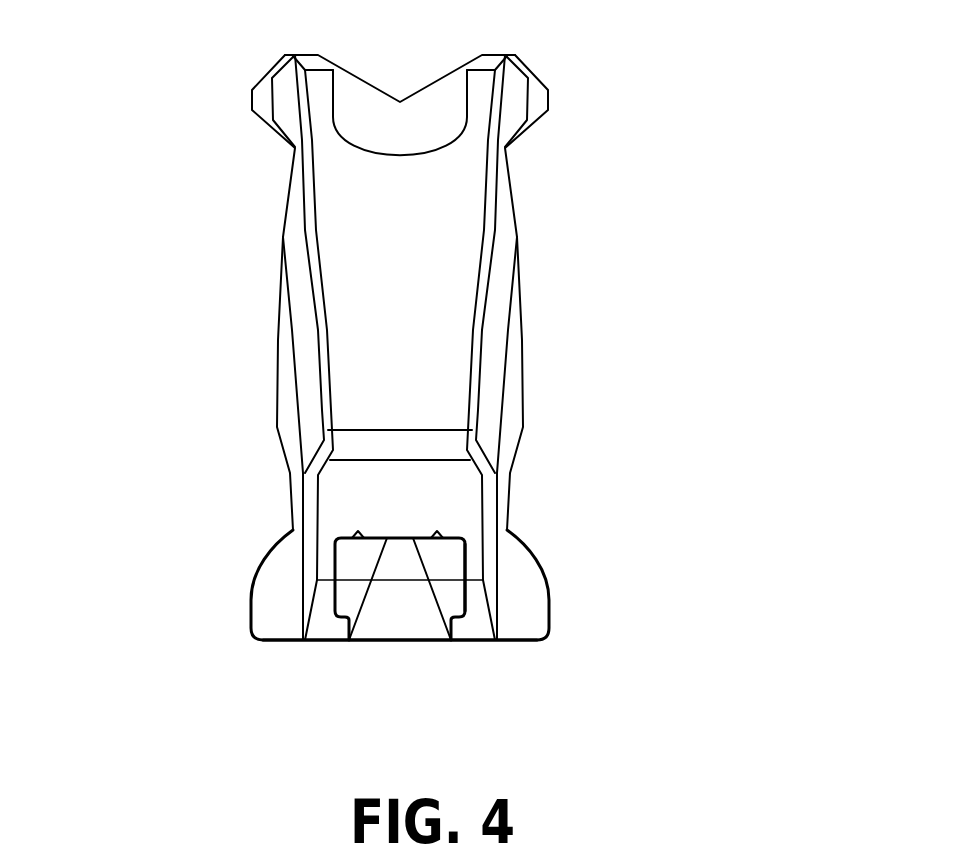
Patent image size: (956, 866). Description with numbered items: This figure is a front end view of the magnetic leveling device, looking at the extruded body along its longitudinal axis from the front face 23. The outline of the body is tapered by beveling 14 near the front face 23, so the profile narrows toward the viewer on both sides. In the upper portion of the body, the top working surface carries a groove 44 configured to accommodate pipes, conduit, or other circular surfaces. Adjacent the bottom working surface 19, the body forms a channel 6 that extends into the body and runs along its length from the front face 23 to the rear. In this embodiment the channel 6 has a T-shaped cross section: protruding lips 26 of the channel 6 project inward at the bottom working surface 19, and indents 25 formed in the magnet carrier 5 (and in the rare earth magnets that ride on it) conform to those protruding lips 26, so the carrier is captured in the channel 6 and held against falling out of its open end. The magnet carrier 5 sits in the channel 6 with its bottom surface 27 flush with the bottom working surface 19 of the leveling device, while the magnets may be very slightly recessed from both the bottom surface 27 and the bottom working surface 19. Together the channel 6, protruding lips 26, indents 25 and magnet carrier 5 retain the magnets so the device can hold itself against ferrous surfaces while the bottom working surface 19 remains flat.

The groove 44 is at (402, 98).
The front face 23 is at (387, 278).
The beveling 14 is at (298, 282).
The indents 25 is at (392, 537).
The magnet carrier 5 is at (335, 562).
The channel 6 is at (467, 552).
The protruding lips 26 is at (343, 640).
The bottom working surface 19 is at (507, 642).
The bottom surface of the magnet carrier 27 is at (391, 642).